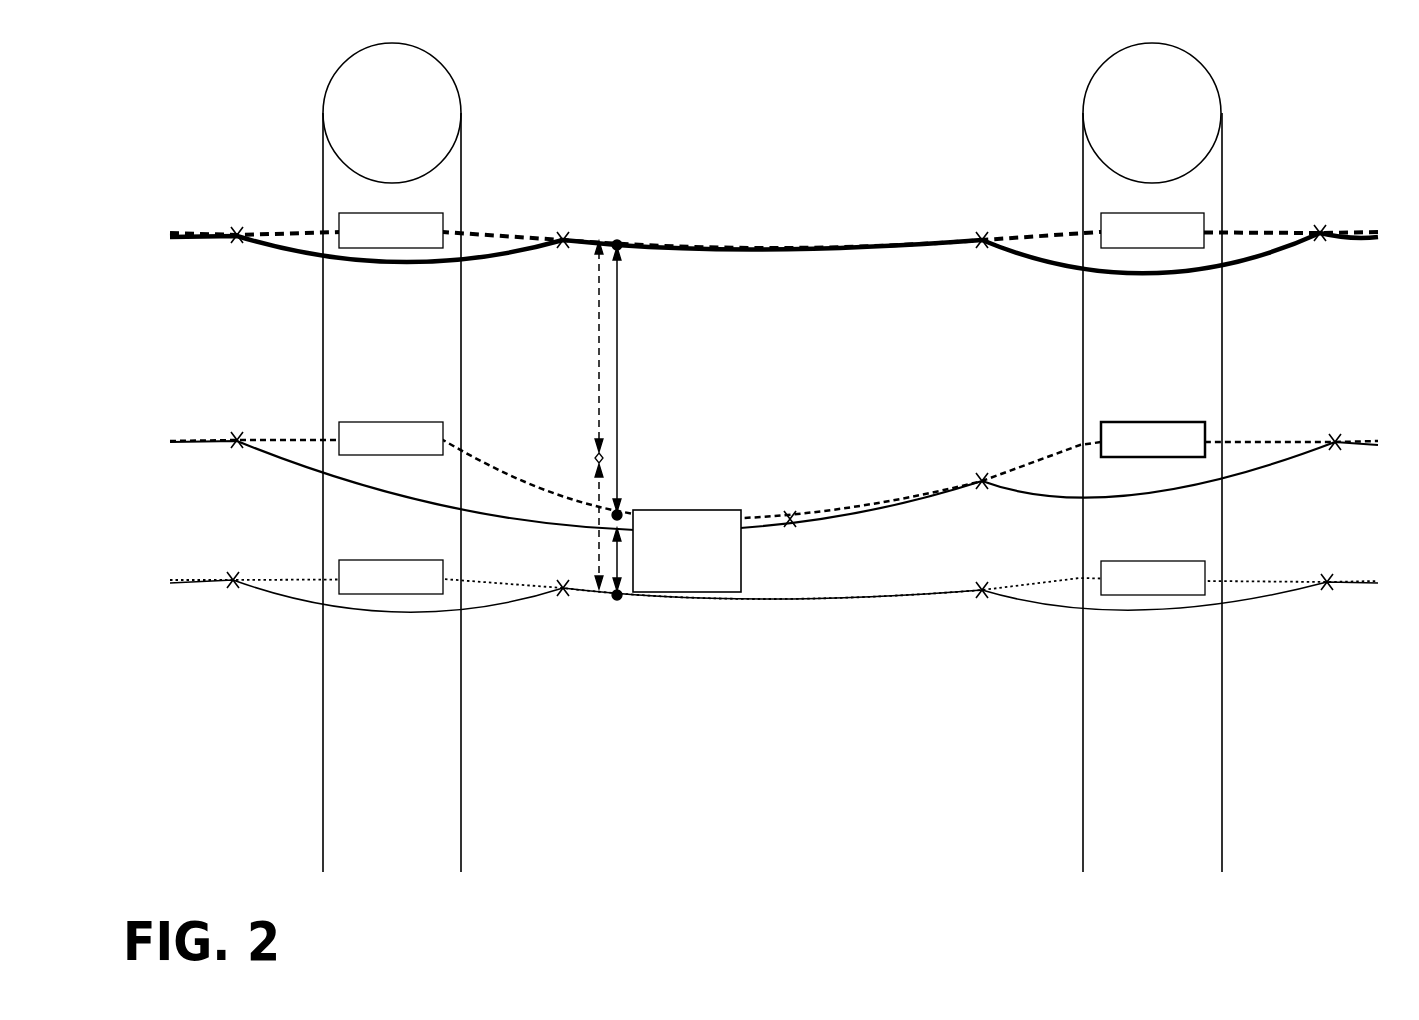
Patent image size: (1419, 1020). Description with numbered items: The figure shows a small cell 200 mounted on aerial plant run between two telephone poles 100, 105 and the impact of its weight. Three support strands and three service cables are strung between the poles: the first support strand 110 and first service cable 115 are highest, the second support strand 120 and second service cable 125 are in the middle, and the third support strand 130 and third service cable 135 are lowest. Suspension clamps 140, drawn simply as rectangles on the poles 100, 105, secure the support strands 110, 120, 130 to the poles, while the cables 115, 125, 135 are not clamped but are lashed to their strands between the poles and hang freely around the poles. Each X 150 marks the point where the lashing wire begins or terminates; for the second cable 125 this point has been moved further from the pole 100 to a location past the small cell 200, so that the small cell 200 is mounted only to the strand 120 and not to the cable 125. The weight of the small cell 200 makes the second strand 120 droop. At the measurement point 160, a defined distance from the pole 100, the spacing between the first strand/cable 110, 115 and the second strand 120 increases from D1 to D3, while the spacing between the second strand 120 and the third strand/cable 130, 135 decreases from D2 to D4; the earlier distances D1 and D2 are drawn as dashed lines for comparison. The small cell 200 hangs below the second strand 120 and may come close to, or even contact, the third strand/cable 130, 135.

The telephone pole 100 is at (333, 106).
The telephone pole 105 is at (1212, 106).
The first support strand 110 is at (731, 230).
The first service cable 115 is at (775, 250).
The second support strand 120 is at (862, 505).
The second service cable 125 is at (895, 511).
The third support strand 130 is at (856, 598).
The third service cable 135 is at (775, 606).
The suspension clamp 140 is at (390, 233).
The lashing point 150 is at (237, 245).
The measurement point 160 is at (617, 239).
The small cell 200 is at (720, 508).
The distance D1 is at (597, 290).
The distance D2 is at (597, 547).
The distance D3 is at (620, 290).
The distance D4 is at (620, 565).